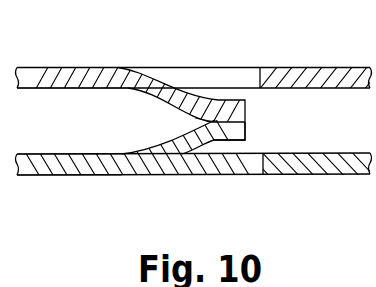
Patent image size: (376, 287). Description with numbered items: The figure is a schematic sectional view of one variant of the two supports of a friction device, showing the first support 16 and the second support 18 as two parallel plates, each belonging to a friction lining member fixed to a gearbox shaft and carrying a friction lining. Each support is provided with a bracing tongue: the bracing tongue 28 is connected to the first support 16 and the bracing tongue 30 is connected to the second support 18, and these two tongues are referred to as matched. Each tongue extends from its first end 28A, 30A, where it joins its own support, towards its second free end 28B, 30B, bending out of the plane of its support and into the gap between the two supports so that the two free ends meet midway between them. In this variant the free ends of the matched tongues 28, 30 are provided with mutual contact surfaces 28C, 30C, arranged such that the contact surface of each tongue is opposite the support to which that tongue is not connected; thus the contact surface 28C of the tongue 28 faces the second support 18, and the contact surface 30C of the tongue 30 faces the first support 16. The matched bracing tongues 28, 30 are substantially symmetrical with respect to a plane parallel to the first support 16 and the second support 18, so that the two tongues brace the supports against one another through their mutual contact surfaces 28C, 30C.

The first support 16 is at (321, 78).
The second support 18 is at (343, 163).
The bracing tongue 28 is at (160, 92).
The first end 28A is at (127, 78).
The second free end 28B is at (232, 108).
The contact surface 28C is at (225, 136).
The bracing tongue 30 is at (172, 159).
The first end 30A is at (111, 156).
The second free end 30B is at (236, 140).
The contact surface 30C is at (195, 118).